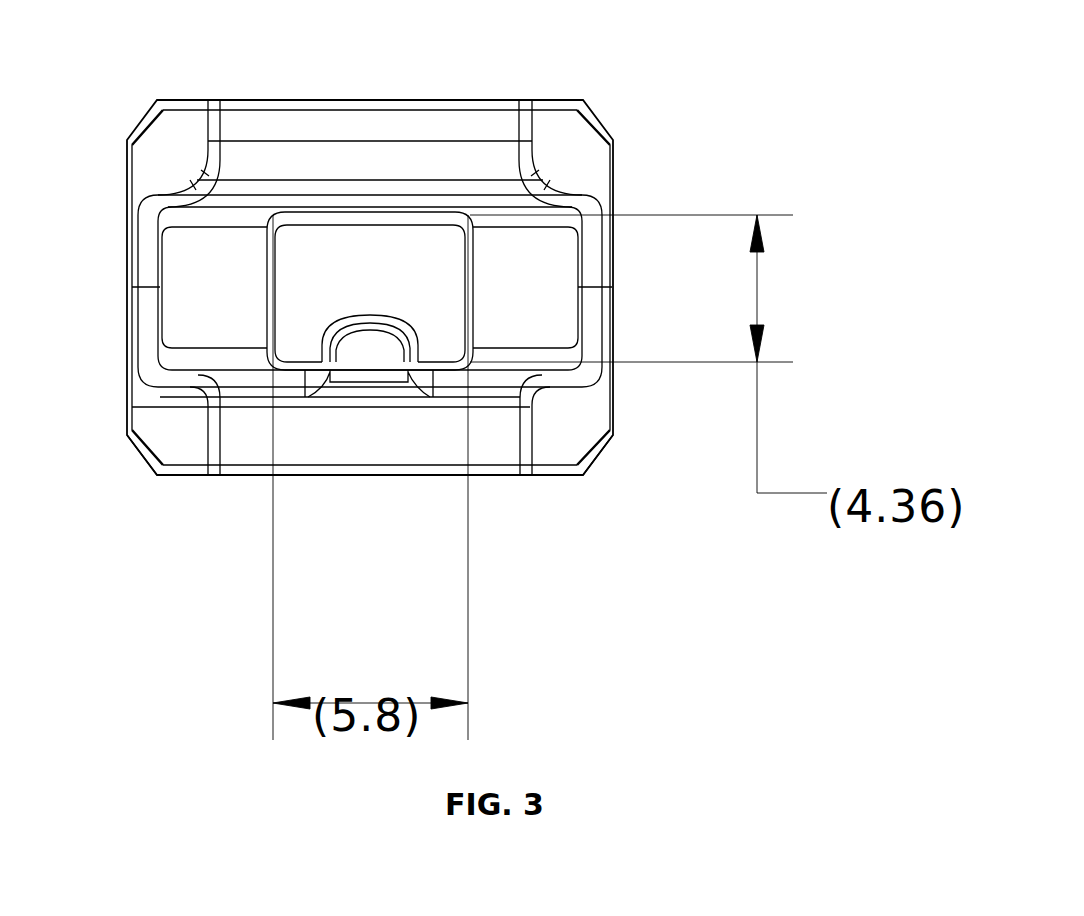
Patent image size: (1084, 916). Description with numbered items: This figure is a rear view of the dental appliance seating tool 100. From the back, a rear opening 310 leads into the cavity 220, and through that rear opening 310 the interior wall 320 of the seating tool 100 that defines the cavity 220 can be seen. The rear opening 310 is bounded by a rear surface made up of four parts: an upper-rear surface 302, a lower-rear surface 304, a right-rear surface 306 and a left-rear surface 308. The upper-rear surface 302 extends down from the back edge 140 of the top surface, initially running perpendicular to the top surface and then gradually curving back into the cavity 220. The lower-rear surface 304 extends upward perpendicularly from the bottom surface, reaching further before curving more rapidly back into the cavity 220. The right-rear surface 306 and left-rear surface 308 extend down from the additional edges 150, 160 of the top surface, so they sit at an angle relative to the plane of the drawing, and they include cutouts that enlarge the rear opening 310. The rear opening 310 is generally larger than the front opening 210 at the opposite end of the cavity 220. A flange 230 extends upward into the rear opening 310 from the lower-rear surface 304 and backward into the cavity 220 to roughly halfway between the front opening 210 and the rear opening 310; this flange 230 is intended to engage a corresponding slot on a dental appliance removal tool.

The seating tool 100 is at (131, 86).
The back edge of the top surface 140 is at (338, 100).
The additional edge of the top surface 150 is at (196, 100).
The additional edge of the top surface 160 is at (573, 100).
The upper-rear surface 302 is at (420, 118).
The rear opening 310 is at (230, 258).
The interior wall 320 is at (570, 247).
The front opening 210 is at (465, 265).
The cavity 220 is at (300, 283).
The flange 230 is at (372, 352).
The lower-rear surface 304 is at (248, 455).
The right-rear surface 306 is at (175, 420).
The left-rear surface 308 is at (580, 418).